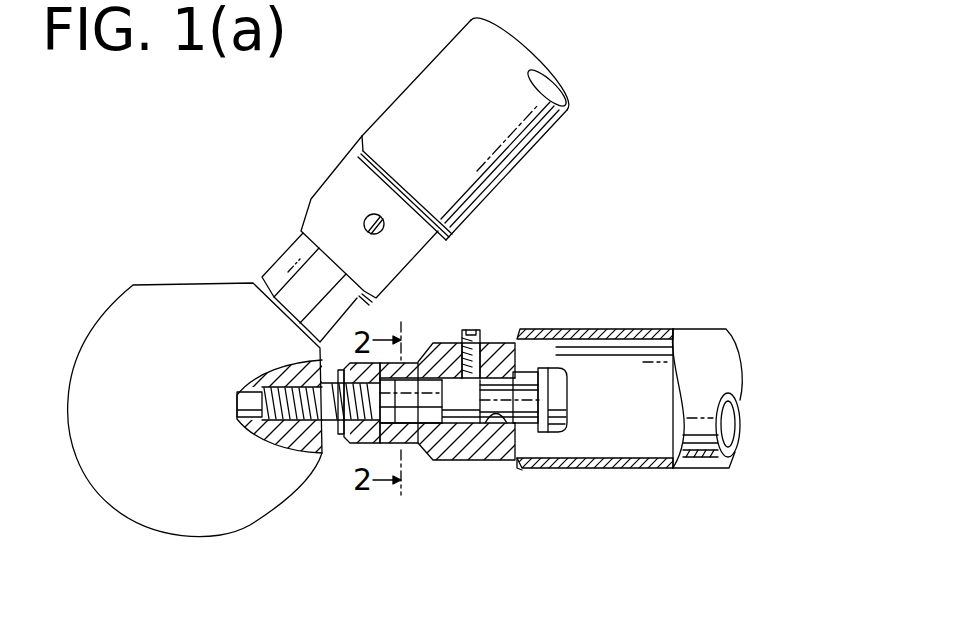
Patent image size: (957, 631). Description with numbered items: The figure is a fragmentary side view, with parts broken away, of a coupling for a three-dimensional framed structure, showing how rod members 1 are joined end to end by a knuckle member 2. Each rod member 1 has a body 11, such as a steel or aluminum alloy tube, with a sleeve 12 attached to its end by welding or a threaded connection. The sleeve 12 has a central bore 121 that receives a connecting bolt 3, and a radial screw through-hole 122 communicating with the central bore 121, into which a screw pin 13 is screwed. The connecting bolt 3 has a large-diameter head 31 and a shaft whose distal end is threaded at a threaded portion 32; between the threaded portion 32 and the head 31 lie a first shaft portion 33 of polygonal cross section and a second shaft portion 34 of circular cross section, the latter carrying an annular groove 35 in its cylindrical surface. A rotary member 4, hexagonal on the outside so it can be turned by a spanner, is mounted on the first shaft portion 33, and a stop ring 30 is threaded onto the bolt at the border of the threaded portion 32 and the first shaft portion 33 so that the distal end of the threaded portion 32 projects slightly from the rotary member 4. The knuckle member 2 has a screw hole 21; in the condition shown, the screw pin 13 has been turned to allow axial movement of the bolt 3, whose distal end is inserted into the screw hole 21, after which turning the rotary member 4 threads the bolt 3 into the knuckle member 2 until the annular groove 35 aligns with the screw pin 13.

The rod member 1 is at (392, 88).
The body 11 is at (612, 468).
The sleeve 12 is at (463, 460).
The central bore 121 is at (508, 470).
The radial screw through-hole 122 is at (445, 375).
The screw pin 13 is at (365, 218).
The knuckle member 2 is at (180, 550).
The screw hole 21 is at (295, 448).
The connecting bolt 3 is at (578, 410).
The stop ring 30 is at (355, 443).
The large-diameter head 31 is at (548, 373).
The threaded portion 32 is at (333, 425).
The first shaft portion 33 is at (425, 402).
The second shaft portion 34 is at (430, 399).
The annular groove 35 is at (484, 414).
The rotary member 4 is at (341, 440).